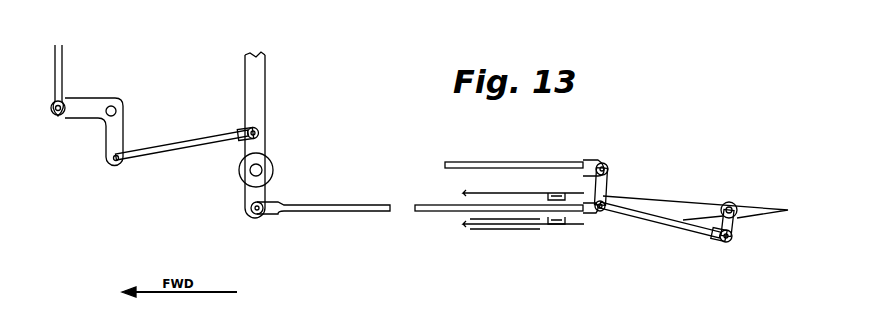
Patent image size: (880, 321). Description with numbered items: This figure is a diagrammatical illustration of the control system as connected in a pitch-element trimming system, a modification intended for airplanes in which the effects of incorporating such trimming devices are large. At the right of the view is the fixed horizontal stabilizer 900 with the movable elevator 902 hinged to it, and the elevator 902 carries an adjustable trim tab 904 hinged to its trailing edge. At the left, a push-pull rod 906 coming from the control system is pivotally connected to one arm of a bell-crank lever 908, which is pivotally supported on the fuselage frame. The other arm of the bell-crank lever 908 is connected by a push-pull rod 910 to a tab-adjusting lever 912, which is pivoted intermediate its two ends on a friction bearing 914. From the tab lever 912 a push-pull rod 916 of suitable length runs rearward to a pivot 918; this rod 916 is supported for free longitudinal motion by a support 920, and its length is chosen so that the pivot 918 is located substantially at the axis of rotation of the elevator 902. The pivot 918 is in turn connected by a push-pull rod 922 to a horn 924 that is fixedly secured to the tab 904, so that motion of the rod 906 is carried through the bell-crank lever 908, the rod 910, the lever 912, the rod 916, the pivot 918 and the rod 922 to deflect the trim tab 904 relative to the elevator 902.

The fixed horizontal stabilizer 900 is at (493, 227).
The movable elevator 902 is at (677, 195).
The adjustable trim tab 904 is at (756, 203).
The push-pull rod 906 is at (64, 62).
The bell-crank lever 908 is at (83, 123).
The push-pull rod 910 is at (170, 144).
The tab-adjusting lever 912 is at (268, 91).
The friction bearing 914 is at (274, 169).
The push-pull rod 916 is at (380, 202).
The pivot 918 is at (606, 201).
The support 920 is at (553, 224).
The push-pull rod 922 is at (677, 234).
The horn 924 is at (736, 224).